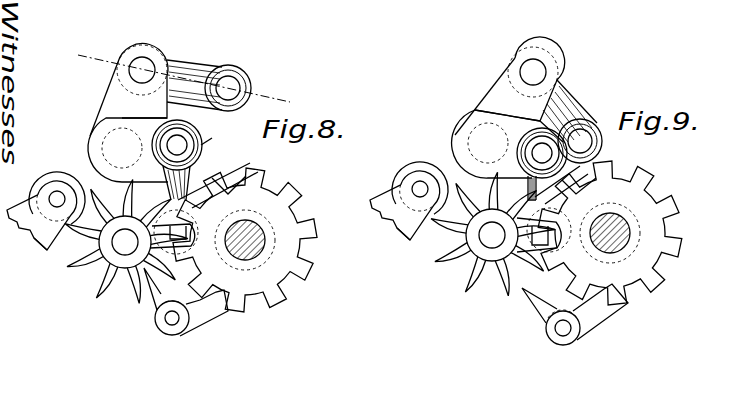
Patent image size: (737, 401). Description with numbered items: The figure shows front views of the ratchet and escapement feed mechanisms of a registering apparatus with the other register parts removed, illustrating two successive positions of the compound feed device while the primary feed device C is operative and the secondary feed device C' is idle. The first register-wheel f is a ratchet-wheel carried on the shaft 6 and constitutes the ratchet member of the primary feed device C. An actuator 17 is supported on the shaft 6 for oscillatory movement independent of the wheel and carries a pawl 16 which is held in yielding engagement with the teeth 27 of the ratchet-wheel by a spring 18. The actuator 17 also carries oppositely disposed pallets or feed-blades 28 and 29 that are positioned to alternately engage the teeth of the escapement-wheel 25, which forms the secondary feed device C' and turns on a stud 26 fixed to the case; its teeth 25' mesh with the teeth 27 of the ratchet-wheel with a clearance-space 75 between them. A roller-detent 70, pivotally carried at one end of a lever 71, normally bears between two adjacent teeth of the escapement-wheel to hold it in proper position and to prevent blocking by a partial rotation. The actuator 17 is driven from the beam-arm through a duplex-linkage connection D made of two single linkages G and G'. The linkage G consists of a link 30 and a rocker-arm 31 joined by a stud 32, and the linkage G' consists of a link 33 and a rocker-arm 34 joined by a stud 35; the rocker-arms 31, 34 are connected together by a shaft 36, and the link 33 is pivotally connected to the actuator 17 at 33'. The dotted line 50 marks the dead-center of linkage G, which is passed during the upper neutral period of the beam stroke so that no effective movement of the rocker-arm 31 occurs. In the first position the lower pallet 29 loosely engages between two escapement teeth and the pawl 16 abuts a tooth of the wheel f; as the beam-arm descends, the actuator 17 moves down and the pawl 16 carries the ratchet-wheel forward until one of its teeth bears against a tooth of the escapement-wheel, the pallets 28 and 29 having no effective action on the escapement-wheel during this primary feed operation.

In FIG. 8, the shaft 6 is at (253, 231).
In FIG. 9, the shaft 6 is at (616, 224).
In FIG. 8, the pawl 16 is at (209, 313).
In FIG. 9, the pawl 16 is at (596, 318).
In FIG. 8, the actuator 17 is at (238, 179).
In FIG. 9, the actuator 17 is at (568, 238).
In FIG. 8, the spring 18 is at (254, 303).
In FIG. 9, the spring 18 is at (630, 290).
In FIG. 8, the escapement-wheel 25 is at (126, 250).
In FIG. 9, the escapement-wheel 25 is at (491, 234).
In FIG. 8, the teeth of the escapement-wheel 25' is at (121, 307).
In FIG. 9, the teeth of the escapement-wheel 25' is at (480, 297).
In FIG. 8, the stud 26 is at (122, 244).
In FIG. 9, the stud 26 is at (490, 226).
In FIG. 8, the teeth 27 is at (302, 199).
In FIG. 9, the teeth 27 is at (610, 172).
In FIG. 8, the pallet 28 is at (212, 168).
In FIG. 9, the pallet 28 is at (566, 184).
In FIG. 8, the pallet 29 is at (153, 298).
In FIG. 9, the pallet 29 is at (527, 294).
In FIG. 8, the link 30 is at (196, 68).
In FIG. 9, the link 30 is at (575, 106).
In FIG. 8, the rocker-arm 31 is at (117, 89).
In FIG. 9, the rocker-arm 31 is at (498, 83).
In FIG. 8, the stud 32 is at (141, 67).
In FIG. 9, the stud 32 is at (534, 62).
In FIG. 8, the link 33 is at (166, 183).
In FIG. 8, the pivotal connection 33' is at (196, 226).
In FIG. 9, the pivotal connection 33' is at (549, 225).
In FIG. 8, the rocker-arm 34 is at (141, 125).
In FIG. 9, the rocker-arm 34 is at (509, 121).
In FIG. 8, the stud 35 is at (177, 145).
In FIG. 9, the stud 35 is at (542, 164).
In FIG. 8, the shaft 36 is at (106, 147).
In FIG. 9, the shaft 36 is at (472, 136).
In FIG. 8, the dead-center line 50 is at (170, 73).
In FIG. 8, the roller-detent 70 is at (44, 176).
In FIG. 9, the roller-detent 70 is at (406, 166).
In FIG. 8, the lever 71 is at (60, 176).
In FIG. 9, the lever 71 is at (388, 214).
In FIG. 8, the clearance-space 75 is at (173, 226).
In FIG. 9, the clearance-space 75 is at (510, 258).
In FIG. 8, the single linkage G is at (161, 39).
In FIG. 9, the single linkage G is at (567, 63).
In FIG. 8, the single linkage G' is at (212, 134).
In FIG. 9, the single linkage G' is at (490, 147).
In FIG. 8, the duplex-linkage connection D is at (81, 105).
In FIG. 9, the duplex-linkage connection D is at (459, 95).
In FIG. 8, the primary feed device C is at (316, 257).
In FIG. 9, the primary feed device C is at (677, 267).
In FIG. 8, the secondary feed device C' is at (76, 287).
In FIG. 9, the secondary feed device C' is at (442, 282).
In FIG. 8, the register-wheel f is at (273, 261).
In FIG. 9, the register-wheel f is at (639, 257).